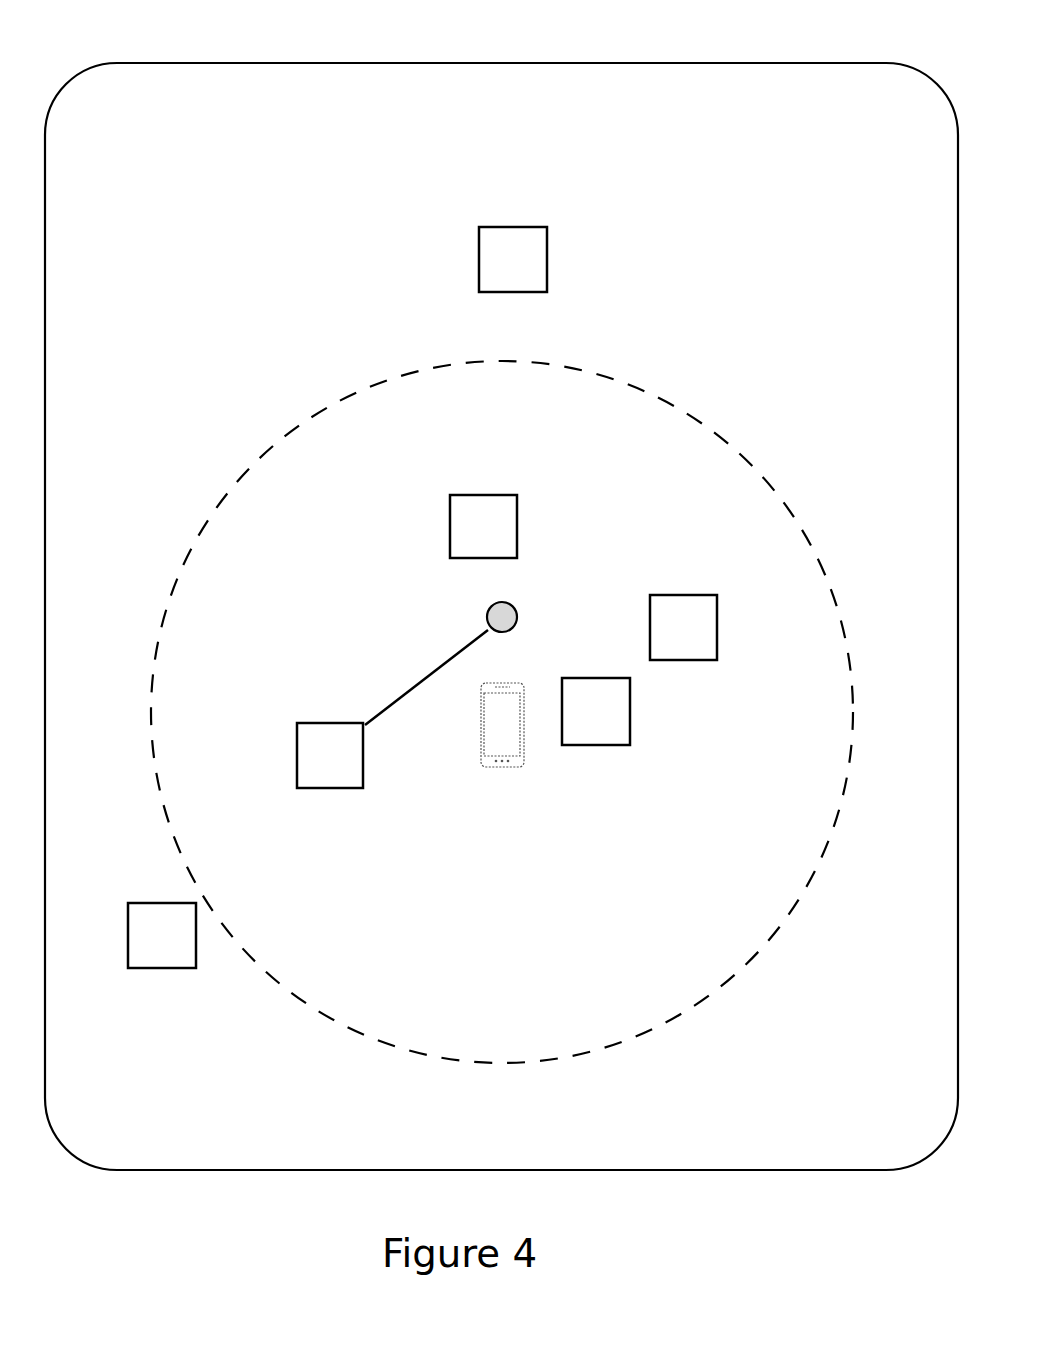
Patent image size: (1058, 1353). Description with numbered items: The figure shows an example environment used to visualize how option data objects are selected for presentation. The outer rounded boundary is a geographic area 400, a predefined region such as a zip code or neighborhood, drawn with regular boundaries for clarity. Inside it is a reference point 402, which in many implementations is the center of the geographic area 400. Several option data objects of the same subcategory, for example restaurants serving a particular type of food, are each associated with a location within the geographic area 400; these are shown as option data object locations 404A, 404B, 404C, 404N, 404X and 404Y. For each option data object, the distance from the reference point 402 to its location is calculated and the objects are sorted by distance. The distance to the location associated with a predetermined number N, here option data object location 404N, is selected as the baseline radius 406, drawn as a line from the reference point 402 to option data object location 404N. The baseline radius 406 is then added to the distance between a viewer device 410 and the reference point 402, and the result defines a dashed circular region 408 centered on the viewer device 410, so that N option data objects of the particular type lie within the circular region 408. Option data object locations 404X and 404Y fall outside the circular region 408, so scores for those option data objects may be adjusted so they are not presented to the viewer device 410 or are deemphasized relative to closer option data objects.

The geographic area 400 is at (501, 595).
The reference point 402 is at (543, 597).
The option data object location 404A is at (457, 539).
The option data object location 404B is at (570, 726).
The option data object location 404C is at (657, 641).
The option data object location 404N is at (304, 767).
The option data object location 404X is at (487, 271).
The option data object location 404Y is at (136, 947).
The baseline radius 406 is at (404, 668).
The circular region 408 is at (502, 712).
The viewer device 410 is at (503, 764).